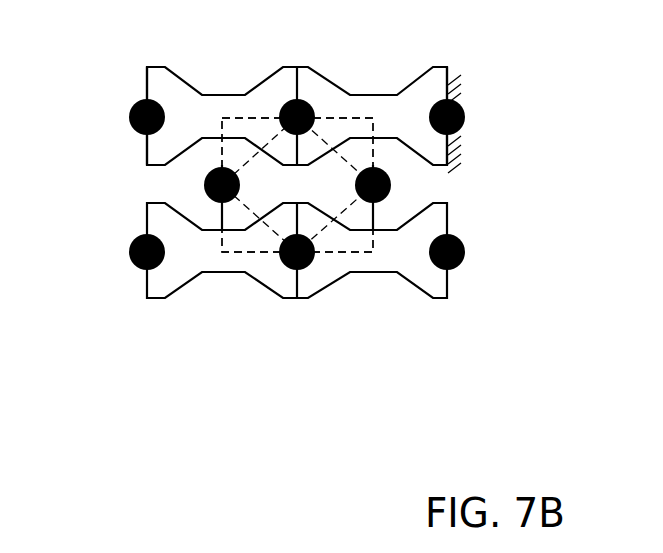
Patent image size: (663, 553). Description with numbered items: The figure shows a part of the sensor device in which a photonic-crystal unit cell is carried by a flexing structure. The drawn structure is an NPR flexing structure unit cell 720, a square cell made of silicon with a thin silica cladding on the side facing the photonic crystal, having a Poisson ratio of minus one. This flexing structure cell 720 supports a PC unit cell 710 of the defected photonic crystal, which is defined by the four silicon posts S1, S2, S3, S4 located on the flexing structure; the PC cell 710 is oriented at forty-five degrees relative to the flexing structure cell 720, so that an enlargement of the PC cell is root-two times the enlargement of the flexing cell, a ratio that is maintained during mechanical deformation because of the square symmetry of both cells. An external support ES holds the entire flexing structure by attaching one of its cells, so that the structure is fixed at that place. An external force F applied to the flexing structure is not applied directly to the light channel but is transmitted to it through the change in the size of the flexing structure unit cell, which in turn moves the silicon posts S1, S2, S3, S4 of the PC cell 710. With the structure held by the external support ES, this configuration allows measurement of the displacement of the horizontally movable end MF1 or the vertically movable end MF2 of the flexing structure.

The PC unit cell 710 is at (240, 163).
The NPR flexing structure unit cell 720 is at (254, 116).
The external support ES is at (447, 68).
The silicon post S1 is at (407, 185).
The silicon post S2 is at (311, 268).
The silicon post S3 is at (197, 186).
The silicon post S4 is at (318, 102).
The external force F is at (2, 119).
The horizontally movable end MF1 is at (92, 245).
The vertically movable end MF2 is at (297, 298).